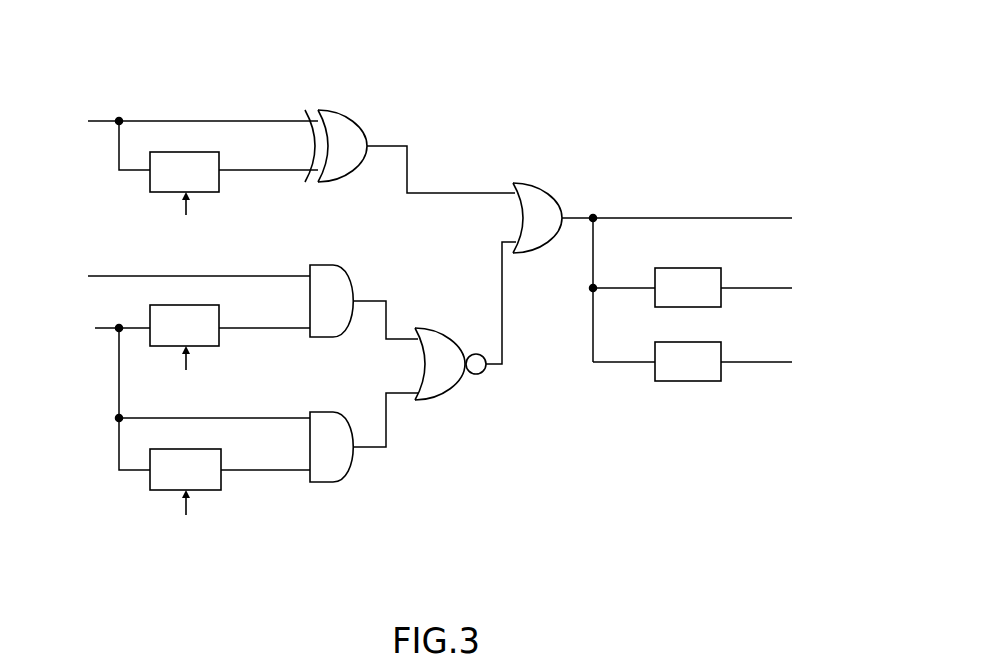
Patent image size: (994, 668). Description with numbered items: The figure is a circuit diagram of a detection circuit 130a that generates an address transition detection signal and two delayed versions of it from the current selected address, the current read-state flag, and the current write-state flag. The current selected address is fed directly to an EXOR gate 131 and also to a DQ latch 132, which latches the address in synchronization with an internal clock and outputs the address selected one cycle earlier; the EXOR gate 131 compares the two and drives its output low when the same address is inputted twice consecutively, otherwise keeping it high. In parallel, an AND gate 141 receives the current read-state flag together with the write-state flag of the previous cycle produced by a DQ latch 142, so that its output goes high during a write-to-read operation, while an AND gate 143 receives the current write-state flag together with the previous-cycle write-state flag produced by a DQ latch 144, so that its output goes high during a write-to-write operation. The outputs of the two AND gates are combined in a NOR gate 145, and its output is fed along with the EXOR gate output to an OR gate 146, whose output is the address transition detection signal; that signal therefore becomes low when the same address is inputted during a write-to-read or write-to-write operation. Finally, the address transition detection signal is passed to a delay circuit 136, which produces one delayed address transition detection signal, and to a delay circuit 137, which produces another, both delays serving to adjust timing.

The detection circuit 130a is at (737, 38).
The EXOR gate 131 is at (340, 112).
The DQ latch 132 is at (219, 185).
The AND gate 141 is at (340, 263).
The DQ latch 142 is at (219, 338).
The AND gate 143 is at (340, 410).
The DQ latch 144 is at (221, 480).
The NOR gate 145 is at (433, 330).
The OR gate 146 is at (538, 185).
The delay circuit 136 is at (721, 302).
The delay circuit 137 is at (721, 375).